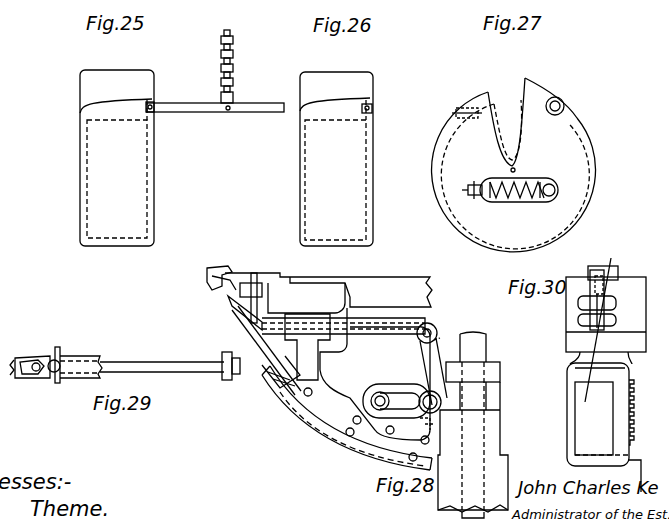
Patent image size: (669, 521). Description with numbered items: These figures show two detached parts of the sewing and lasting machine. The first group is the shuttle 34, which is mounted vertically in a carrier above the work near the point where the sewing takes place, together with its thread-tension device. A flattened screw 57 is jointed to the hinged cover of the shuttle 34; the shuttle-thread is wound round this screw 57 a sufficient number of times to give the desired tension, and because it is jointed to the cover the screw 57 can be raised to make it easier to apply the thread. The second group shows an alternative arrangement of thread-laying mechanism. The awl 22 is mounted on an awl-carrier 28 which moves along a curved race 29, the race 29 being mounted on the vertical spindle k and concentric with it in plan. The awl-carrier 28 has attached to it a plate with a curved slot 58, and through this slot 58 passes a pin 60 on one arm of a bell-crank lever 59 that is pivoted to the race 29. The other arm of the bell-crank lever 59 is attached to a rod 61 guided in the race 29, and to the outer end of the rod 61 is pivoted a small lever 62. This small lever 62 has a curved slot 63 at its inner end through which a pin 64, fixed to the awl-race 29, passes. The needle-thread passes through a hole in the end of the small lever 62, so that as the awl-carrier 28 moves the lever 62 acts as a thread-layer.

In FIG. 25, the shuttle 34 is at (117, 158).
In FIG. 27, the shuttle 34 is at (514, 165).
In FIG. 25, the flattened screw 57 is at (234, 57).
In FIG. 27, the flattened screw 57 is at (513, 125).
In FIG. 28, the small lever 62 is at (232, 280).
In FIG. 29, the small lever 62 is at (36, 358).
In FIG. 29, the curved slot 63 is at (52, 360).
In FIG. 28, the pin 64 is at (258, 286).
In FIG. 29, the pin 64 is at (56, 380).
In FIG. 28, the rod 61 is at (382, 327).
In FIG. 29, the rod 61 is at (145, 362).
In FIG. 28, the awl 22 is at (246, 329).
In FIG. 28, the curved race 29 is at (318, 370).
In FIG. 28, the pin 60 is at (379, 392).
In FIG. 28, the curved slot 58 is at (410, 395).
In FIG. 28, the bell-crank lever 59 is at (440, 352).
In FIG. 28, the awl-carrier 28 is at (322, 418).
In FIG. 28, the vertical spindle k is at (480, 346).